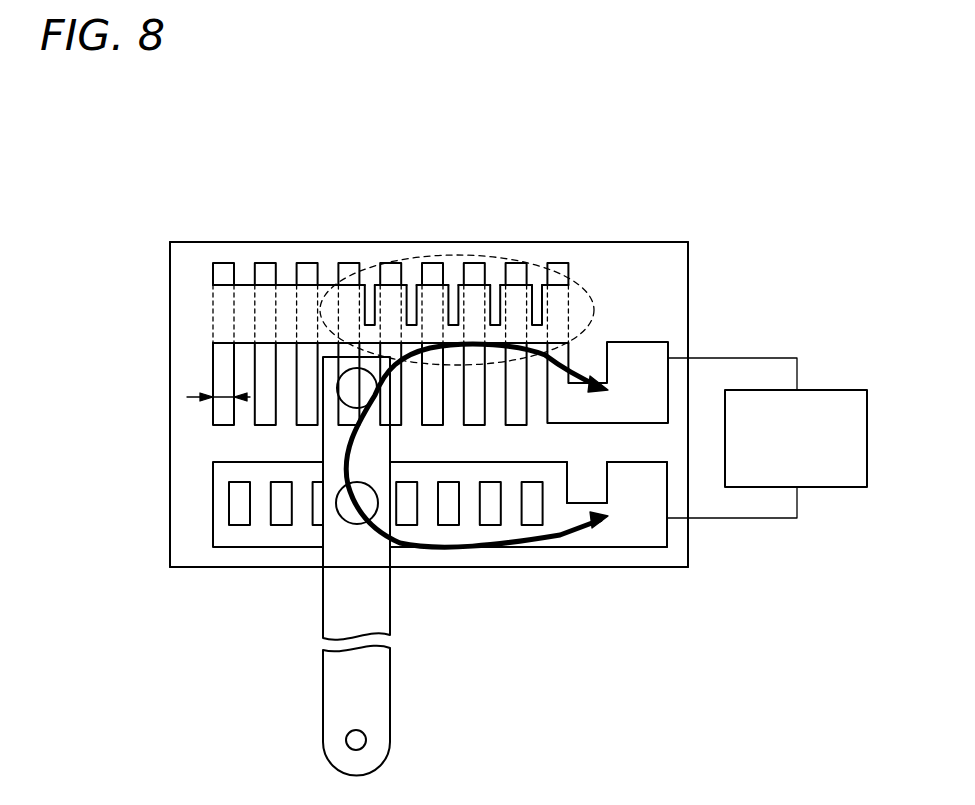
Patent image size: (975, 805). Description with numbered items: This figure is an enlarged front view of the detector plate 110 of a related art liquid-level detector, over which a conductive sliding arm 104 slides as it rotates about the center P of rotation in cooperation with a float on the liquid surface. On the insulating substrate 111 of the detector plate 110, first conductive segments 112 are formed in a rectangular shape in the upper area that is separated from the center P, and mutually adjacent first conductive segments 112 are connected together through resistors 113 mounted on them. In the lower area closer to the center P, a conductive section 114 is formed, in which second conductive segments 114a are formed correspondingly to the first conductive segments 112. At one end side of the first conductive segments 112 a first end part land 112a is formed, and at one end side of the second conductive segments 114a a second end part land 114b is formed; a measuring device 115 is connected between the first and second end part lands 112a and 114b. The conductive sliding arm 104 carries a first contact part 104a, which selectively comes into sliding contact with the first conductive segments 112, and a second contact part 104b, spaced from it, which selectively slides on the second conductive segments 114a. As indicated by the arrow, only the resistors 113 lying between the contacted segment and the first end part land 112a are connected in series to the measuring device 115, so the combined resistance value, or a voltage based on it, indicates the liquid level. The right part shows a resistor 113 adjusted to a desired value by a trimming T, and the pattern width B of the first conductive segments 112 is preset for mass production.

The detector plate 110 is at (165, 205).
The insulating substrate 111 is at (657, 258).
The first conductive segments 112 is at (307, 263).
The first end part land 112a is at (640, 348).
The resistors 113 is at (330, 283).
The conductive section 114 is at (205, 517).
The second conductive segments 114a is at (305, 511).
The second end part land 114b is at (637, 528).
The measuring device 115 is at (830, 390).
The conductive sliding arm 104 is at (400, 593).
The first contact part 104a is at (342, 403).
The second contact part 104b is at (355, 525).
The trimming T is at (534, 282).
The pattern width B is at (222, 397).
The center of rotation P is at (366, 740).